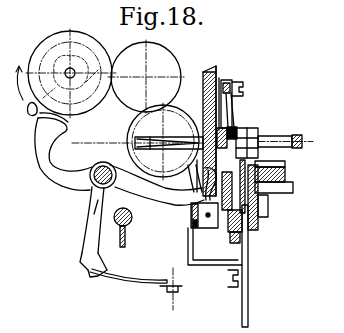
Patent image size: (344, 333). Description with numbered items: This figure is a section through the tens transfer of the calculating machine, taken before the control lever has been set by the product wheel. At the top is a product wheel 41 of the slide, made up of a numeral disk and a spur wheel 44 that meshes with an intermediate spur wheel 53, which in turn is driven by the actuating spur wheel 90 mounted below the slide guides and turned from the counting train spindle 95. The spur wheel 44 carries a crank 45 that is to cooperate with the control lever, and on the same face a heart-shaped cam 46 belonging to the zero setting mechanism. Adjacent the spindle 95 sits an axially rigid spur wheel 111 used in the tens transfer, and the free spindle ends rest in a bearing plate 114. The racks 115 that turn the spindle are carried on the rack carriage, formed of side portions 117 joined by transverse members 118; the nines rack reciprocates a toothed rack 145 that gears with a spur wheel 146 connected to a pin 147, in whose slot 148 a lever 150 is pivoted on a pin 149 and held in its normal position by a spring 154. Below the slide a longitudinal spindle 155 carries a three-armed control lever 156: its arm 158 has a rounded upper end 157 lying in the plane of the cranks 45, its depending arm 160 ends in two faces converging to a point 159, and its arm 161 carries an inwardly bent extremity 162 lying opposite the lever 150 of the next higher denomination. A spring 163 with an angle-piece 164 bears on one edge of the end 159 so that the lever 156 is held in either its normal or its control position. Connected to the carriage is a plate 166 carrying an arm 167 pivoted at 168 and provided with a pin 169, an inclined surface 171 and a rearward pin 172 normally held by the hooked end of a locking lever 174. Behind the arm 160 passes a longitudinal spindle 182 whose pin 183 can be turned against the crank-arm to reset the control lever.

The product wheel 41 is at (76, 31).
The spur wheel 44 is at (98, 44).
The crank 45 is at (32, 116).
The heart-shaped cam 46 is at (66, 58).
The intermediate spur wheel 53 is at (164, 60).
The actuating spur wheel 90 is at (130, 133).
The counting train spindle 95 is at (295, 135).
The spur wheel 111 is at (203, 97).
The bearing plate 114 is at (247, 236).
The rack 115 is at (263, 165).
The side portion 117 is at (258, 200).
The transverse member 118 is at (284, 190).
The rack 145 is at (258, 204).
The spur wheel 146 is at (232, 236).
The pin 147 is at (192, 222).
The slot 148 is at (203, 229).
The pin 149 is at (192, 215).
The lever 150 is at (192, 182).
The spring 154 is at (258, 217).
The longitudinal spindle 155 is at (96, 184).
The three-armed lever 156 is at (133, 188).
The rounded upper end 157 is at (65, 125).
The lever arm 158 is at (45, 172).
The point 159 is at (88, 256).
The depending lever arm 160 is at (88, 241).
The arm 161 is at (135, 220).
The inwardly bent extremity 162 is at (213, 232).
The spring 163 is at (138, 284).
The angle-piece 164 is at (97, 273).
The plate 166 is at (230, 79).
The arm 167 is at (203, 80).
The pivot 168 is at (243, 84).
The pin 169 is at (234, 116).
The inclined surface 171 is at (261, 167).
The pin 172 is at (186, 146).
The locking lever 174 is at (254, 128).
The longitudinal spindle 182 is at (90, 220).
The pin 183 is at (126, 244).